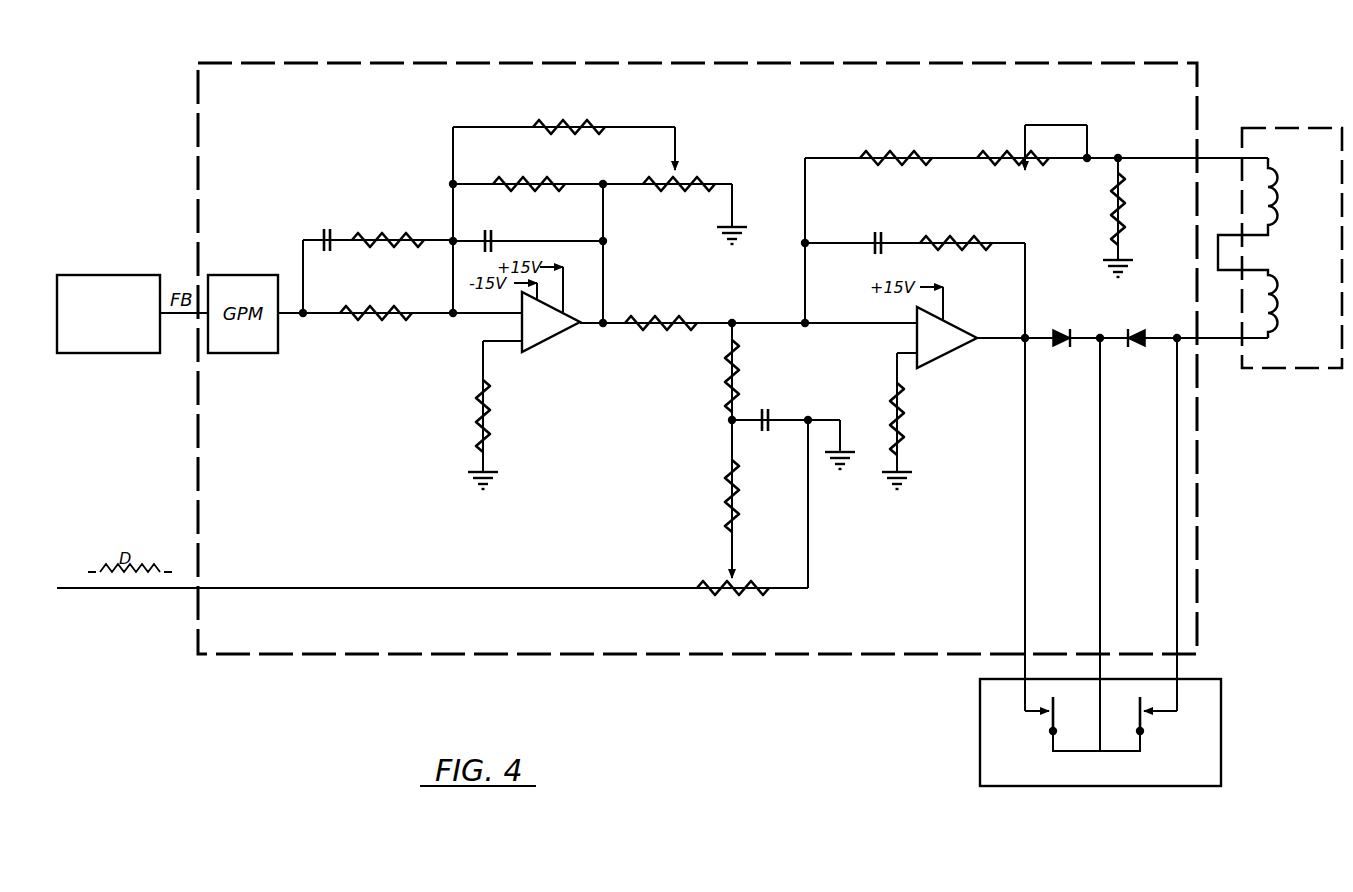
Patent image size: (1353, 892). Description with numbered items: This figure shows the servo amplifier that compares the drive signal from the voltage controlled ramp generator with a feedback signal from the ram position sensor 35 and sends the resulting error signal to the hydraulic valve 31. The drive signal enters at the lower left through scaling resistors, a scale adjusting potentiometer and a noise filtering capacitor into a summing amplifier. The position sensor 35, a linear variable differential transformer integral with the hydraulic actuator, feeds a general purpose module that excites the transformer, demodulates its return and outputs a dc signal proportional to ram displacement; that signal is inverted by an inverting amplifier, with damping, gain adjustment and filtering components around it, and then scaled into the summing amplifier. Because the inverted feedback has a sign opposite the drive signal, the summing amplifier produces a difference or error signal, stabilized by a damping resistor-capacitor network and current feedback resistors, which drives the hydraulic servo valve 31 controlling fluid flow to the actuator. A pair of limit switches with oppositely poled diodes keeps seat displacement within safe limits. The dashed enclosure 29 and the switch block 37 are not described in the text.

The servo amplifier circuit (dashed enclosure) 29 is at (678, 656).
The hydraulic servo valve 31 is at (1289, 369).
The ram position sensor 35 is at (128, 354).
The switch unit S1/S2 37 is at (980, 746).